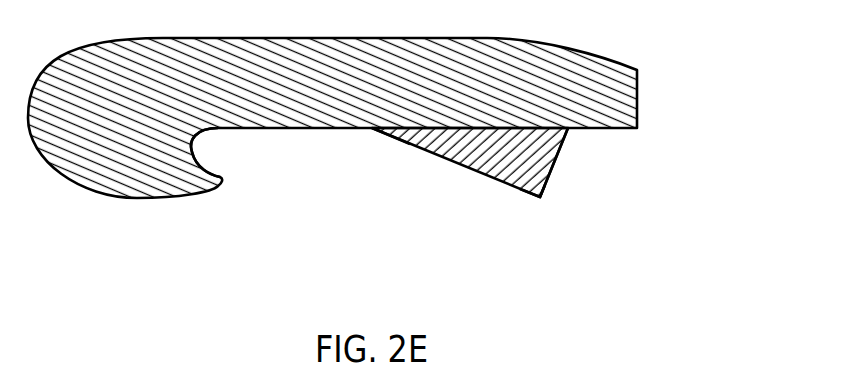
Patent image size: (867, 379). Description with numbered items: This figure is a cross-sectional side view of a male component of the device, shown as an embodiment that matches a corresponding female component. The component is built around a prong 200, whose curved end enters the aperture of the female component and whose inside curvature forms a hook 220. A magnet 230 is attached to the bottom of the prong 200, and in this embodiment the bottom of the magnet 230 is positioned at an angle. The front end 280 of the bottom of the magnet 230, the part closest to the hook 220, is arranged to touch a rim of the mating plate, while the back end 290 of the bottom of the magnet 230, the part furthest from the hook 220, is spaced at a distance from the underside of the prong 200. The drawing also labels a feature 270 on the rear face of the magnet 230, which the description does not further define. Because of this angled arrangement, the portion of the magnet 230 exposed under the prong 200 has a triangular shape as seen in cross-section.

The prong 200 is at (638, 68).
The hook 220 is at (226, 180).
The magnet 230 is at (485, 174).
The end surface 270 is at (559, 152).
The front end 280 is at (372, 130).
The back end 290 is at (541, 198).